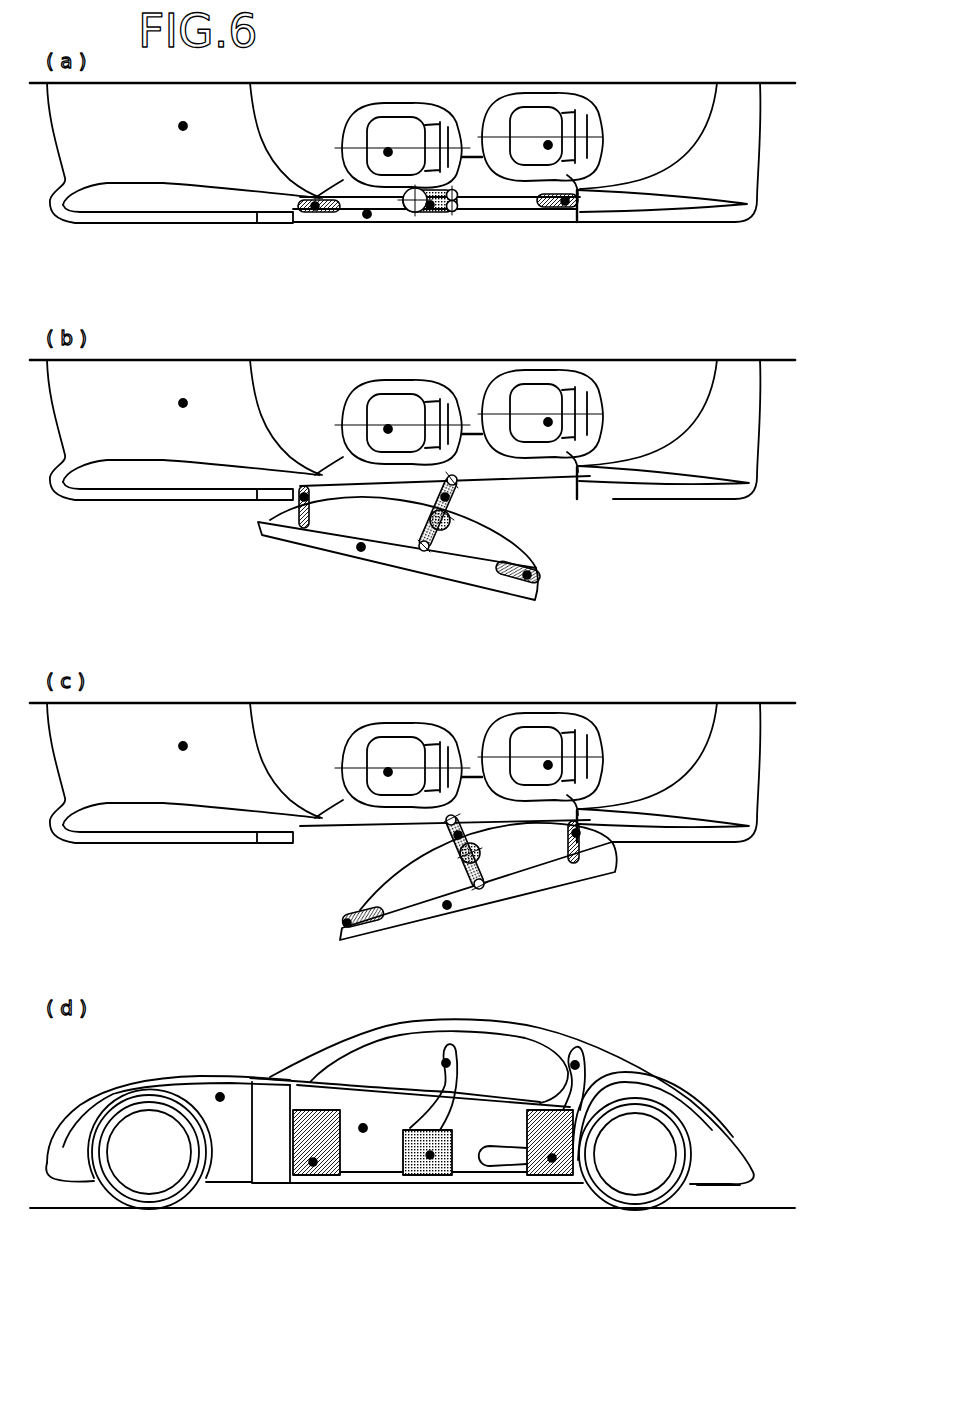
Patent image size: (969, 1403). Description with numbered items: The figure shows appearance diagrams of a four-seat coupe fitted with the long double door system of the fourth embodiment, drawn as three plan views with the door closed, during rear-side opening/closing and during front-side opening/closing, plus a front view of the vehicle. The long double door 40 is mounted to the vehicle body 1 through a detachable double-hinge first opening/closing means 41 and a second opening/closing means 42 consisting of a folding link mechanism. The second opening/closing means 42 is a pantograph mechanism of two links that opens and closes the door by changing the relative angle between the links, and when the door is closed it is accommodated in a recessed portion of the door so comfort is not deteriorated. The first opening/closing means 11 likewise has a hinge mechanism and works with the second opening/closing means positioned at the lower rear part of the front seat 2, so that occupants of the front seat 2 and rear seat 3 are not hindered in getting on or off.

The vehicle body 1 is at (183, 127).
The front seat 2 is at (388, 152).
The rear seat 3 is at (548, 145).
The first opening/closing means 11 is at (430, 1155).
The long double door 40 is at (367, 214).
The first opening/closing means 41 is at (315, 206).
The second opening/closing means 42 is at (432, 205).